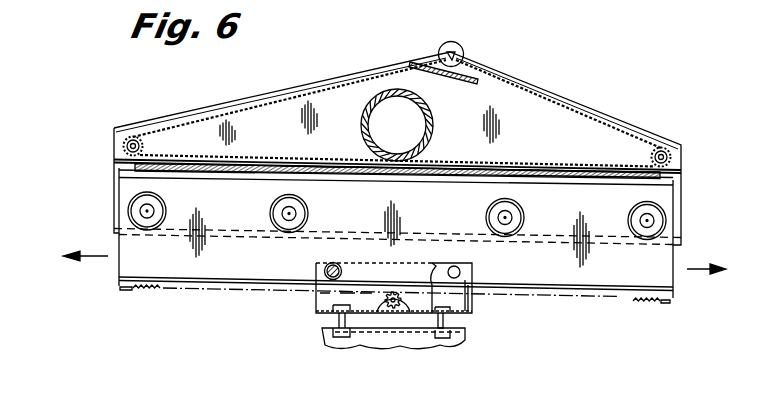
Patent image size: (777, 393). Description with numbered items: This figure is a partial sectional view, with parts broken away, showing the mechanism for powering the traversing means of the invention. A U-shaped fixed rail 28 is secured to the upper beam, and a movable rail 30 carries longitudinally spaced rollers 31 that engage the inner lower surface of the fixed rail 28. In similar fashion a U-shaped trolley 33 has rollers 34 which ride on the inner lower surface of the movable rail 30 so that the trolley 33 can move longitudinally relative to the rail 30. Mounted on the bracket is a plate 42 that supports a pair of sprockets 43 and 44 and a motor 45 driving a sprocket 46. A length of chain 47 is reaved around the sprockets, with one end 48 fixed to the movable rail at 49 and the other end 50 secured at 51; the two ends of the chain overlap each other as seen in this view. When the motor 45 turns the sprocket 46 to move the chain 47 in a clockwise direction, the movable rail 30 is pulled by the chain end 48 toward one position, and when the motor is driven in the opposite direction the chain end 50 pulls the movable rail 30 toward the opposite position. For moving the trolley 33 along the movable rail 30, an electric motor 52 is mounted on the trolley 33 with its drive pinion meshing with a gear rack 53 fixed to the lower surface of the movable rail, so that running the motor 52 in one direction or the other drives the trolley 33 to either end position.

The fixed rail 28 is at (683, 194).
The movable rail 30 is at (667, 258).
The rollers 31 is at (119, 197).
The trolley 33 is at (473, 308).
The rollers 34 is at (325, 263).
The plate 42 is at (458, 125).
The sprocket 43 is at (652, 157).
The sprocket 44 is at (143, 147).
The motor 45 is at (452, 41).
The sprocket 46 is at (438, 74).
The chain 47 is at (183, 118).
The chain end 48 is at (338, 164).
The fixing point 49 is at (490, 170).
The chain end 50 is at (353, 173).
The securing point 51 is at (311, 173).
The electric motor 52 is at (400, 287).
The gear rack 53 is at (637, 301).